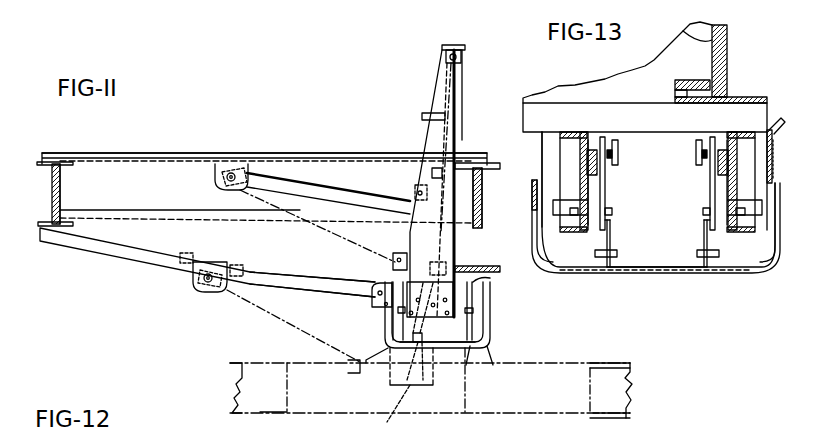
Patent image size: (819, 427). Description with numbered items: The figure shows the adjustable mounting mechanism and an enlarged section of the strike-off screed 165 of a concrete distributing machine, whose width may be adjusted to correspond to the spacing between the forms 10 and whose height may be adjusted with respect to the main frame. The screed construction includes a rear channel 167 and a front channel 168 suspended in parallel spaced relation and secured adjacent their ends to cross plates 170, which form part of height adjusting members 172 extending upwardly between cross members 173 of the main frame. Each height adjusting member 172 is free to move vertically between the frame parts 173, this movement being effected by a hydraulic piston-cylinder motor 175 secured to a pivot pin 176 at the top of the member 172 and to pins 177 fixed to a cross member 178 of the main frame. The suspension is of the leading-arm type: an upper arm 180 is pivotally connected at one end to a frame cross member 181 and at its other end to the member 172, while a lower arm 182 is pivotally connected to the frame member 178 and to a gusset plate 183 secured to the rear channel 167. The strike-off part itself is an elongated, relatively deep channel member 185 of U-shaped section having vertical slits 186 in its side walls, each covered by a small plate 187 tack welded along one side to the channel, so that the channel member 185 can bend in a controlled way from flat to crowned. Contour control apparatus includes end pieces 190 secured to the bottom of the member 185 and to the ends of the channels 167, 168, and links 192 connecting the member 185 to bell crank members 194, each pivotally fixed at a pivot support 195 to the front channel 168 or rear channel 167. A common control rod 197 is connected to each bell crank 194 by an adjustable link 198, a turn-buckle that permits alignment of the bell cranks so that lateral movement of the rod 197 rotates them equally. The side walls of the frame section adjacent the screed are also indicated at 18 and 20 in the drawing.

In FIG. 11, the forms 10 is at (628, 392).
In FIG. 11, the side wall I-beam 18 is at (52, 190).
In FIG. 13, the side wall I-beam 18 is at (727, 49).
In FIG. 11, the wall clip / flange 20 is at (52, 211).
In FIG. 13, the wall clip / flange 20 is at (712, 30).
In FIG. 11, the strike-off screed 165 is at (496, 330).
In FIG. 13, the strike-off screed 165 is at (688, 283).
In FIG. 13, the rear channel member 167 is at (592, 187).
In FIG. 11, the front channel member 168 is at (472, 309).
In FIG. 13, the front channel member 168 is at (710, 189).
In FIG. 11, the cross plate 170 is at (460, 293).
In FIG. 11, the height adjusting member 172 is at (432, 96).
In FIG. 11, the cross member of the main frame 173 is at (266, 153).
In FIG. 11, the hydraulic piston-cylinder motor 175 is at (456, 90).
In FIG. 11, the pivot pin 176 is at (457, 59).
In FIG. 11, the pin 177 is at (455, 263).
In FIG. 11, the cross member of the main frame 178 is at (284, 265).
In FIG. 11, the upper arm 180 is at (325, 185).
In FIG. 11, the frame cross member 181 is at (215, 172).
In FIG. 11, the lower arm 182 is at (253, 293).
In FIG. 11, the gusset plate 183 is at (372, 302).
In FIG. 11, the channel member 185 is at (482, 350).
In FIG. 13, the channel member 185 is at (732, 274).
In FIG. 13, the vertical slit 186 is at (550, 265).
In FIG. 13, the small plate 187 is at (533, 180).
In FIG. 13, the end piece 190 is at (643, 269).
In FIG. 13, the link 192 is at (703, 237).
In FIG. 13, the bell crank member 194 is at (710, 182).
In FIG. 13, the pivot support 195 is at (698, 213).
In FIG. 13, the control rod 197 is at (710, 165).
In FIG. 13, the adjustable link 198 is at (607, 146).